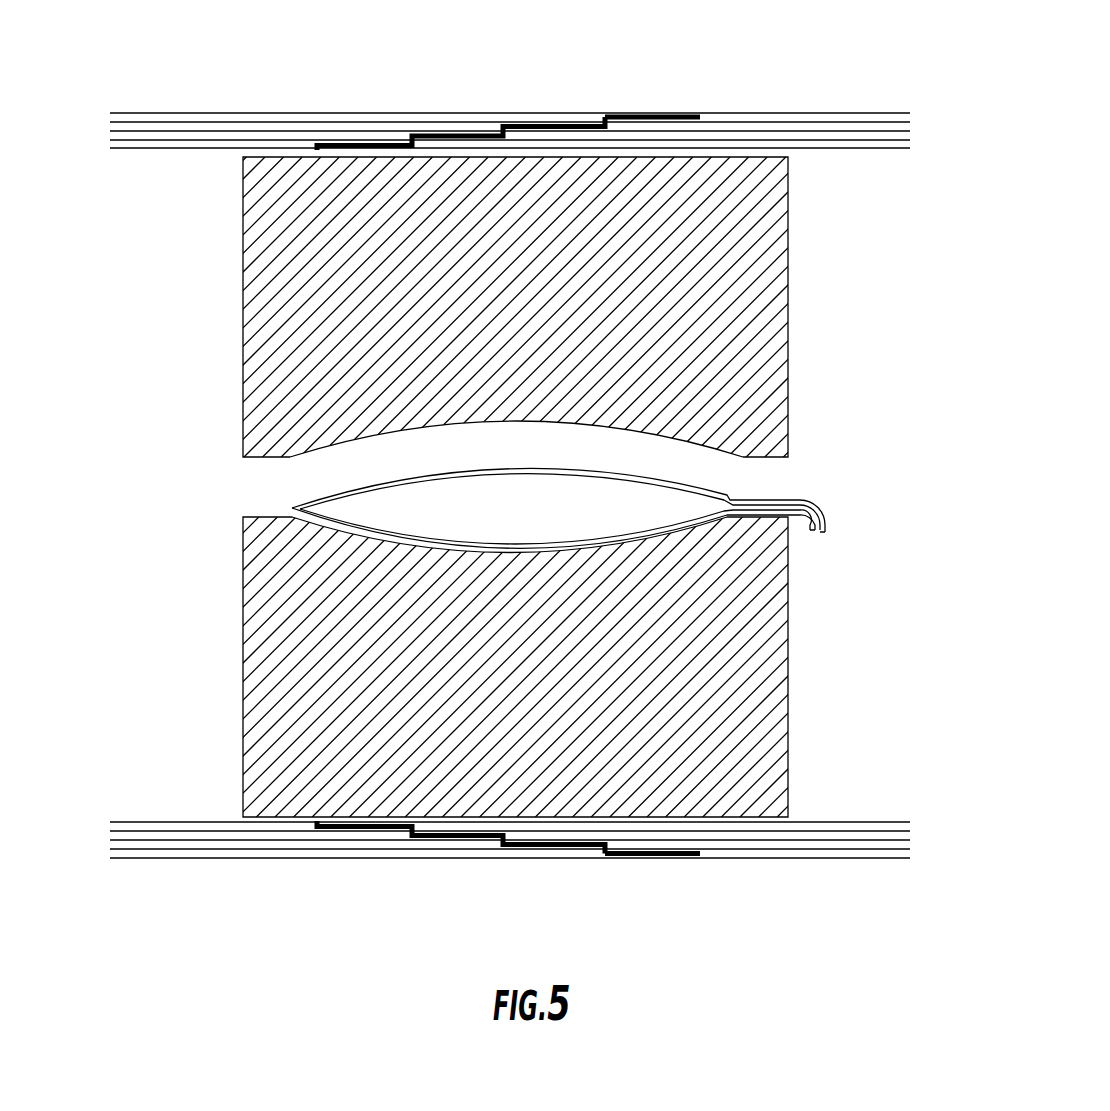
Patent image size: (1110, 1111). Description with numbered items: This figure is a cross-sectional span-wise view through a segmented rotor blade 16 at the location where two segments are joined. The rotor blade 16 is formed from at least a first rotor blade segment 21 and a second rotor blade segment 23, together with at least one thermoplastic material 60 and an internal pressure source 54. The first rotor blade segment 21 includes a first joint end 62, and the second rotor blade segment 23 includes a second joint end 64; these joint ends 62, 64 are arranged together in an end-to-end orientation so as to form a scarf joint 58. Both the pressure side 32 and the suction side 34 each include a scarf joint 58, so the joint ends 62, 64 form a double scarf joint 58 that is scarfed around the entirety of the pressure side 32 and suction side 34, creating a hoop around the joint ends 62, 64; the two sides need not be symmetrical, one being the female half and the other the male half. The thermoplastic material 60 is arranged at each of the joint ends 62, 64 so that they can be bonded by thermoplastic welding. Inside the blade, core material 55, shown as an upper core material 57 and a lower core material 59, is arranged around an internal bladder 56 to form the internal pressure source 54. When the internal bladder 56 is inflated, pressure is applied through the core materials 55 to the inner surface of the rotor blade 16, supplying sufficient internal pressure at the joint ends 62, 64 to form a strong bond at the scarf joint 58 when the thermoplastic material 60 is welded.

The rotor blade 16 is at (120, 58).
The first rotor blade segment 21 is at (233, 93).
The second rotor blade segment 23 is at (953, 103).
The pressure side 32 is at (272, 892).
The suction side 34 is at (330, 108).
The internal pressure source 54 is at (878, 456).
The core material 55 is at (767, 352).
The internal bladder 56 is at (740, 493).
The upper core material 57 is at (767, 410).
The scarf joint 58 is at (577, 903).
The lower core material 59 is at (770, 700).
The thermoplastic material 60 is at (620, 113).
The first joint end 62 is at (433, 110).
The second joint end 64 is at (745, 113).